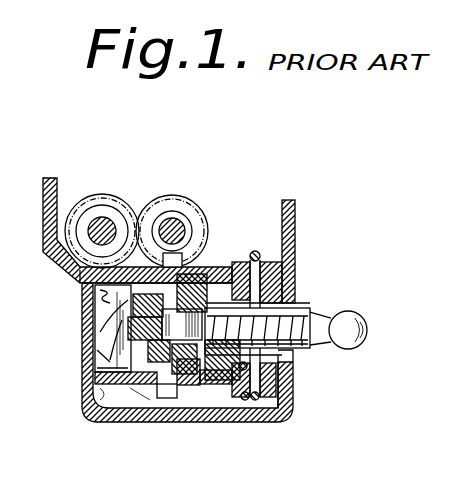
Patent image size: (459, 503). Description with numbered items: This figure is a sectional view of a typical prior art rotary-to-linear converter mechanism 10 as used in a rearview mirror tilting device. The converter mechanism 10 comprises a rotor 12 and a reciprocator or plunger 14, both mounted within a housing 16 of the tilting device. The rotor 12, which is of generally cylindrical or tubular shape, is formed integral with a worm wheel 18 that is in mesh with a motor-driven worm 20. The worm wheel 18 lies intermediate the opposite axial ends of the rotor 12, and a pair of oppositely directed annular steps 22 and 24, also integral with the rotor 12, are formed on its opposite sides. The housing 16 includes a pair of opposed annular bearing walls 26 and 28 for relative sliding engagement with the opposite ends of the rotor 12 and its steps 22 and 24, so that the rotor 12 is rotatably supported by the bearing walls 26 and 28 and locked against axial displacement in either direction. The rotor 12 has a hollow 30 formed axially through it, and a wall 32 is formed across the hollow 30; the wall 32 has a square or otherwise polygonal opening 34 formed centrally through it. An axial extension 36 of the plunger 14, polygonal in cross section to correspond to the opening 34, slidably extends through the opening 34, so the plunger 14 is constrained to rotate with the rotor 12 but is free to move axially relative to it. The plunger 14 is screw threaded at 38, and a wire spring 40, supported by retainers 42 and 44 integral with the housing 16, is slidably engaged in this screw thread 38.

The converter mechanism 10 is at (103, 423).
The rotor 12 is at (116, 302).
The plunger 14 is at (304, 302).
The housing 16 is at (300, 223).
The worm wheel 18 is at (175, 388).
The worm 20 is at (173, 227).
The annular step 22 is at (147, 220).
The annular step 24 is at (212, 272).
The bearing wall 26 is at (80, 292).
The bearing wall 28 is at (228, 268).
The hollow 30 is at (153, 388).
The wall 32 is at (197, 381).
The opening 34 is at (130, 330).
The axial extension 36 is at (82, 367).
The screw thread 38 is at (305, 318).
The wire spring 40 is at (262, 357).
The retainer 42 is at (268, 262).
The retainer 44 is at (292, 399).